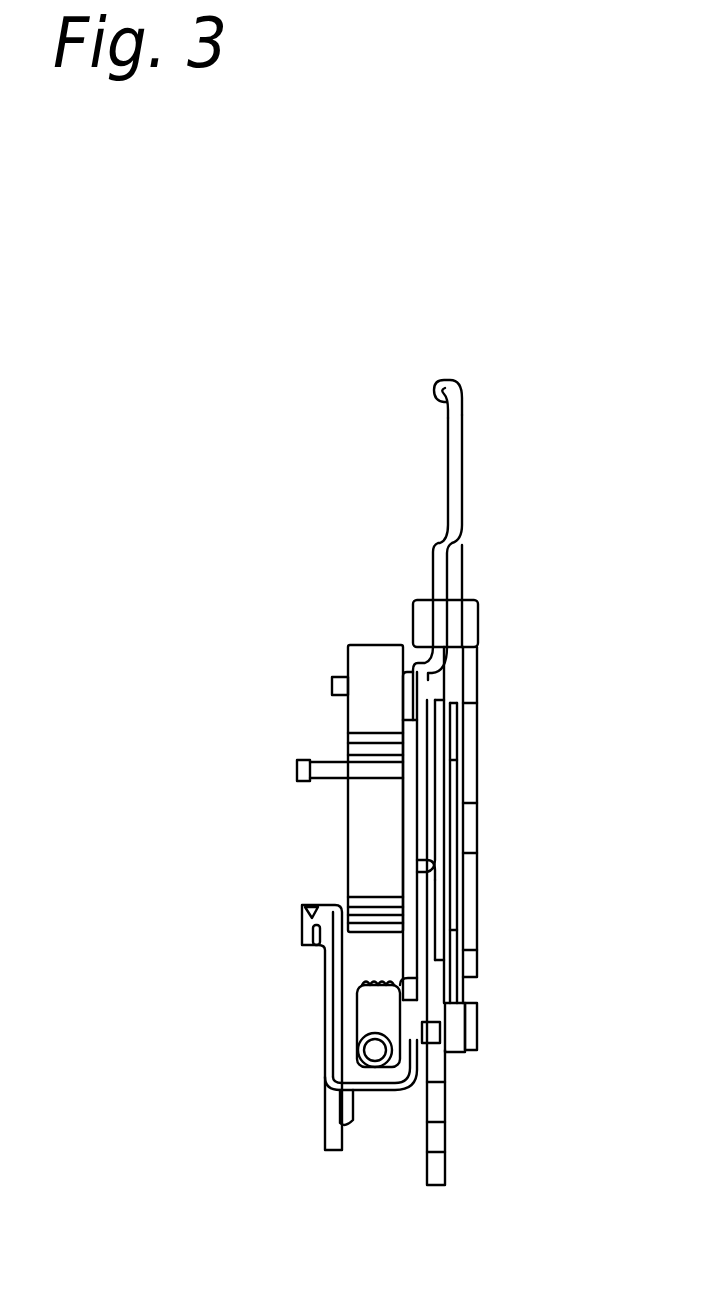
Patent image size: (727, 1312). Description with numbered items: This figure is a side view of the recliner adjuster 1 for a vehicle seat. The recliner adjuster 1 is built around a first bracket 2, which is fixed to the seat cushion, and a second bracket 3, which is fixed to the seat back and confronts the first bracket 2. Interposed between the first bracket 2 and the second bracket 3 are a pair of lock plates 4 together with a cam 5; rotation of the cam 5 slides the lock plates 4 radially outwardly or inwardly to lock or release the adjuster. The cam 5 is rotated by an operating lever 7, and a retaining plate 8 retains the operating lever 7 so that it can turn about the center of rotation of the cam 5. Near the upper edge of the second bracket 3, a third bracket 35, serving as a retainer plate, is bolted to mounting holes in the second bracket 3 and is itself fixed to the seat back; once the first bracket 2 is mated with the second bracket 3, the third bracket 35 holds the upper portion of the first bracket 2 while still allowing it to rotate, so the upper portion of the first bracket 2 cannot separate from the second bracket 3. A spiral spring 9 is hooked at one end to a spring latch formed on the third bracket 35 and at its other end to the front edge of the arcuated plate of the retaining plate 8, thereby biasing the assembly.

The recliner adjuster 1 is at (148, 588).
The first bracket 2 is at (445, 1083).
The second bracket 3 is at (465, 663).
The lock plates 4 is at (450, 737).
The cam 5 is at (450, 872).
The operating lever 7 is at (330, 1062).
The retaining plate 8 is at (410, 950).
The spiral spring 9 is at (348, 840).
The third bracket 35 is at (452, 378).